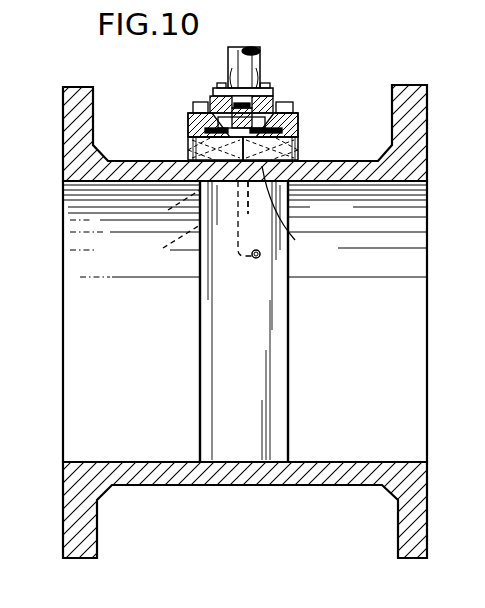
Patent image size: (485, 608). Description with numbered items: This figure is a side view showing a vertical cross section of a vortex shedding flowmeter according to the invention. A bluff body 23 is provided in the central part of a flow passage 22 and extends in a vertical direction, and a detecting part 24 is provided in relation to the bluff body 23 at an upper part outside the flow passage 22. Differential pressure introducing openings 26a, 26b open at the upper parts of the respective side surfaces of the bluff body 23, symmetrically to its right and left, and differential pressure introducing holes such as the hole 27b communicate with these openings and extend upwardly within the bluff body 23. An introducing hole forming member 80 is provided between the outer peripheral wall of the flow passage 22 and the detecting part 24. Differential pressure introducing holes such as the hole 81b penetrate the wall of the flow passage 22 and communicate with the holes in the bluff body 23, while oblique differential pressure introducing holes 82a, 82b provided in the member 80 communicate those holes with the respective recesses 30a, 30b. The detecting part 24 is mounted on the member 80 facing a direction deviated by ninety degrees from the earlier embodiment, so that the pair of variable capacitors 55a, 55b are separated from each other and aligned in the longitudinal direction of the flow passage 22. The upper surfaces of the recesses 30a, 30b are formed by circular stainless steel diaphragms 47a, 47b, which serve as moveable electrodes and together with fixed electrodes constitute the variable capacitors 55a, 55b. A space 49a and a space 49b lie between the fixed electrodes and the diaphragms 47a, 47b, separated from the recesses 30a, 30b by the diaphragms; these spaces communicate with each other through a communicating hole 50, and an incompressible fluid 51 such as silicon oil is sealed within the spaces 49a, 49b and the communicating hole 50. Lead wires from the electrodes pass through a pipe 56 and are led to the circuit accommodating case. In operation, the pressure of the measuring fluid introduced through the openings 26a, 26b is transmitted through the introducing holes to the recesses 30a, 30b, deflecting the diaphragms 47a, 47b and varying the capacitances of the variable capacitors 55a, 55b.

The flow passage 22 is at (412, 192).
The bluff body 23 is at (290, 346).
The detecting part 24 is at (300, 97).
The differential pressure introducing opening 26a is at (256, 254).
The differential pressure introducing opening 26b is at (254, 259).
The differential pressure introducing hole 27b is at (248, 215).
The recess 30a is at (298, 151).
The recess 30b is at (195, 151).
The diaphragm 47a is at (297, 143).
The diaphragm 47b is at (192, 146).
The space 49a is at (283, 130).
The space 49b is at (206, 130).
The communicating hole 50 is at (228, 75).
The incompressible fluid 51 is at (260, 77).
The variable capacitor 55a is at (277, 122).
The variable capacitor 55b is at (203, 118).
The pipe 56 is at (247, 47).
The introducing hole forming member 80 is at (290, 248).
The differential pressure introducing hole 81b is at (155, 253).
The oblique differential pressure introducing hole 82a is at (296, 210).
The oblique differential pressure introducing hole 82b is at (176, 201).